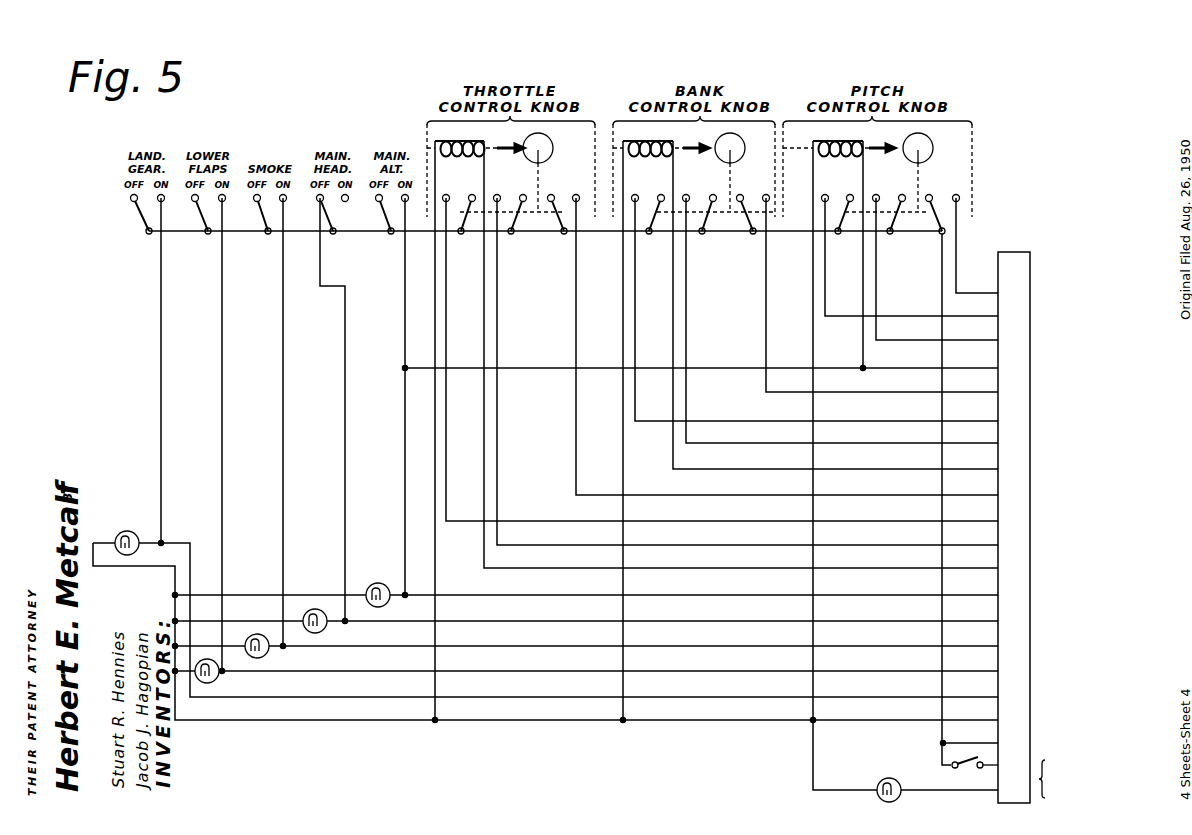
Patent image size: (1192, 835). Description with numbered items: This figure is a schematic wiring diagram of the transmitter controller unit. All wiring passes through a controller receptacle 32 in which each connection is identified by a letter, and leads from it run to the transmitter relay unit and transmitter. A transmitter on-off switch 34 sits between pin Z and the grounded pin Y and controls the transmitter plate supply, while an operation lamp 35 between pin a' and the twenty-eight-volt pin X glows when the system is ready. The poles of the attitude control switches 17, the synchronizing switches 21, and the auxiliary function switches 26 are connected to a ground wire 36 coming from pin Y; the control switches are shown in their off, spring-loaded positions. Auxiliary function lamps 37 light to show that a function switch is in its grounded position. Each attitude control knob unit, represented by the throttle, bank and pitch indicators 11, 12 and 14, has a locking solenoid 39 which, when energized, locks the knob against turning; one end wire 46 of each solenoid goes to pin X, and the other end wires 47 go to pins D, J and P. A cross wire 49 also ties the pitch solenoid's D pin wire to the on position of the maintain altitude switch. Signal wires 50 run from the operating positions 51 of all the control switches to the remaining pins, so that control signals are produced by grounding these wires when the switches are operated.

The throttle control knob indicator dial 11 is at (550, 140).
The bank control knob indicator dial 12 is at (741, 138).
The pitch control knob indicator dial 14 is at (930, 139).
The attitude control switch 17 is at (562, 193).
The synchronizing switch 21 is at (471, 194).
The auxiliary function switch 26 is at (139, 215).
The controller receptacle 32 is at (1017, 264).
The transmitter on-off switch 34 is at (957, 760).
The operation lamp 35 is at (878, 784).
The ground wire 36 is at (782, 232).
The auxiliary function lamp 37 is at (133, 530).
The locking solenoid 39 is at (484, 140).
The solenoid end wire 46 is at (813, 352).
The solenoid end wire 47 is at (863, 311).
The cross wire 49 is at (600, 368).
The signal wire 50 is at (932, 316).
The operating position 51 is at (163, 202).